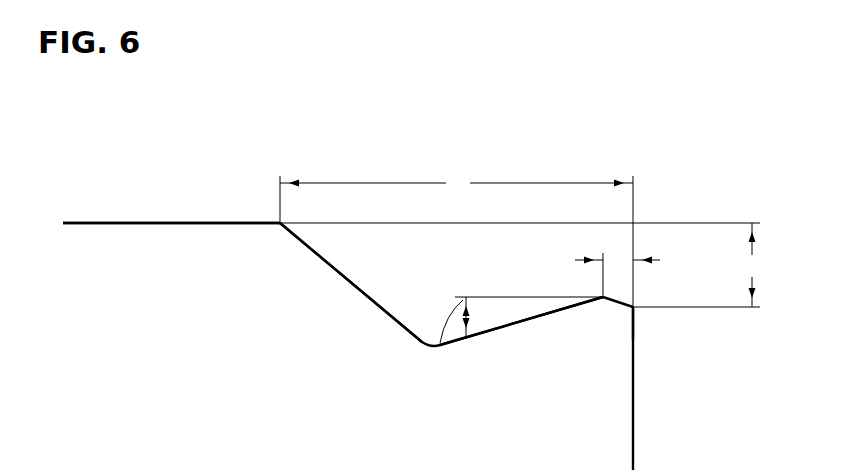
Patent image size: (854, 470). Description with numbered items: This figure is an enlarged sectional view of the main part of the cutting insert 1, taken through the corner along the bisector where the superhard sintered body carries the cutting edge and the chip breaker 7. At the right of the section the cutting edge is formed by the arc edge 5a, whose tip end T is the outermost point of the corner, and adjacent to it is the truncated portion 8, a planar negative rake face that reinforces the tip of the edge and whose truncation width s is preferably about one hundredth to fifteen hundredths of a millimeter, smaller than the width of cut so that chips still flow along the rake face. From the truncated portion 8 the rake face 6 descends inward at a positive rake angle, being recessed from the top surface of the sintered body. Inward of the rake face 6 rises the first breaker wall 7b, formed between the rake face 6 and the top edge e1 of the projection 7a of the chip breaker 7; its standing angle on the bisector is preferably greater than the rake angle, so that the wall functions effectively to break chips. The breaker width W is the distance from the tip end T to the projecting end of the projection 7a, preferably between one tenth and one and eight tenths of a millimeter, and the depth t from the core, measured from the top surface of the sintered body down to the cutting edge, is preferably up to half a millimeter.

The cutting insert 1 is at (160, 207).
The projection 7a is at (228, 221).
The top edge e1 is at (283, 222).
The first breaker wall 7b is at (318, 259).
The chip breaker 7 is at (406, 335).
The rake face 6 is at (532, 320).
The truncated portion 8 is at (619, 300).
The arc edge 5a is at (637, 308).
The tip end T is at (634, 305).
The breaker width W is at (456, 183).
The truncation width s is at (617, 260).
The depth from a core t is at (752, 265).